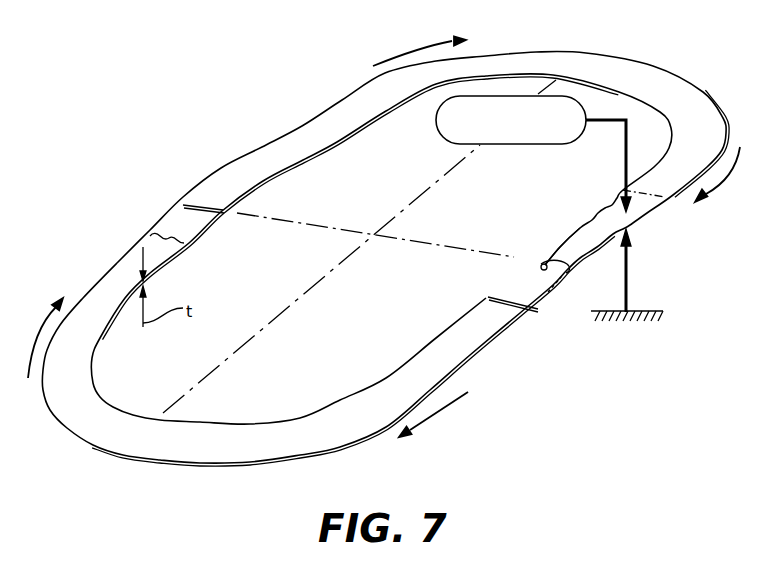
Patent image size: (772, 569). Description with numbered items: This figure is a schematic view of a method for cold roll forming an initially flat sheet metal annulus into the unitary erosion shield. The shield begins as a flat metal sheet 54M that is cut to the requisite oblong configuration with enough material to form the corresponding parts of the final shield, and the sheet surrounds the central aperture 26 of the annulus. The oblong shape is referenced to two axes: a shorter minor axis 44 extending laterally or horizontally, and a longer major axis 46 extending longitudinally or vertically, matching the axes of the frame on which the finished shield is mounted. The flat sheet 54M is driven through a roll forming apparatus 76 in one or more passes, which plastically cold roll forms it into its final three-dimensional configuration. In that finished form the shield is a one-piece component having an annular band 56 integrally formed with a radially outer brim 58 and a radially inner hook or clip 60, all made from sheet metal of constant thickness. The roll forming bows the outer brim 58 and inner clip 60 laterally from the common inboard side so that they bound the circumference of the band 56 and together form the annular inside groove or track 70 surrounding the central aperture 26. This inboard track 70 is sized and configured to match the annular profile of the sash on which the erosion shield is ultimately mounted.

The central aperture 26 is at (326, 364).
The flat metal sheet 54M is at (238, 157).
The roll forming apparatus 76 is at (436, 129).
The minor axis 44 is at (306, 221).
The major axis 46 is at (434, 181).
The annular band 56 is at (586, 236).
The inner clip 60 is at (558, 250).
The inside track 70 is at (557, 270).
The outer brim 58 is at (578, 266).